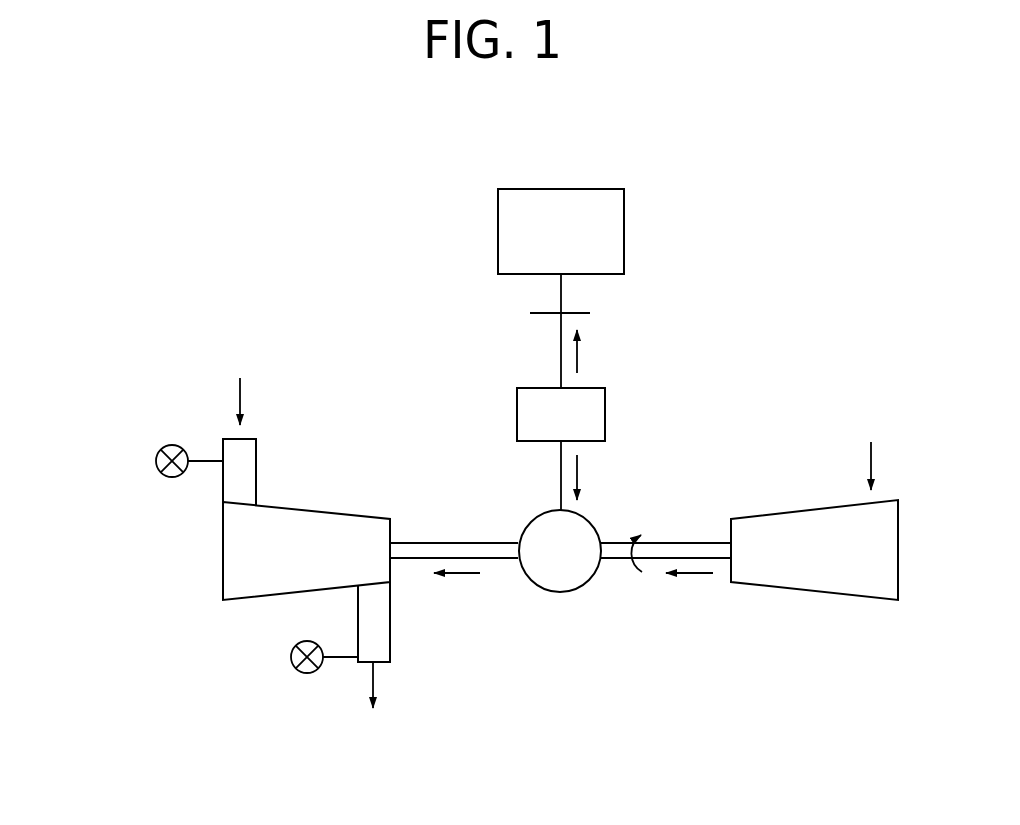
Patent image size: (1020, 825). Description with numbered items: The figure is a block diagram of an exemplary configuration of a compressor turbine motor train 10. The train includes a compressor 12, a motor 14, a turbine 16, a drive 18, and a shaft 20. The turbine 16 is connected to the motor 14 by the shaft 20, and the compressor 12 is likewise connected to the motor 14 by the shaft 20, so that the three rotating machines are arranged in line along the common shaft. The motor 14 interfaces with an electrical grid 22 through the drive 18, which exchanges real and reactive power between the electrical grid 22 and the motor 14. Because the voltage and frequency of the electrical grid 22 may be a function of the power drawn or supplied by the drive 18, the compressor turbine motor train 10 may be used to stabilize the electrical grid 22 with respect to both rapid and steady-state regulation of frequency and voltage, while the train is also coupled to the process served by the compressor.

The compressor turbine motor train 10 is at (356, 276).
The compressor 12 is at (320, 523).
The motor 14 is at (538, 525).
The turbine 16 is at (800, 578).
The drive 18 is at (605, 413).
The shaft 20 is at (440, 550).
The electrical grid 22 is at (624, 212).